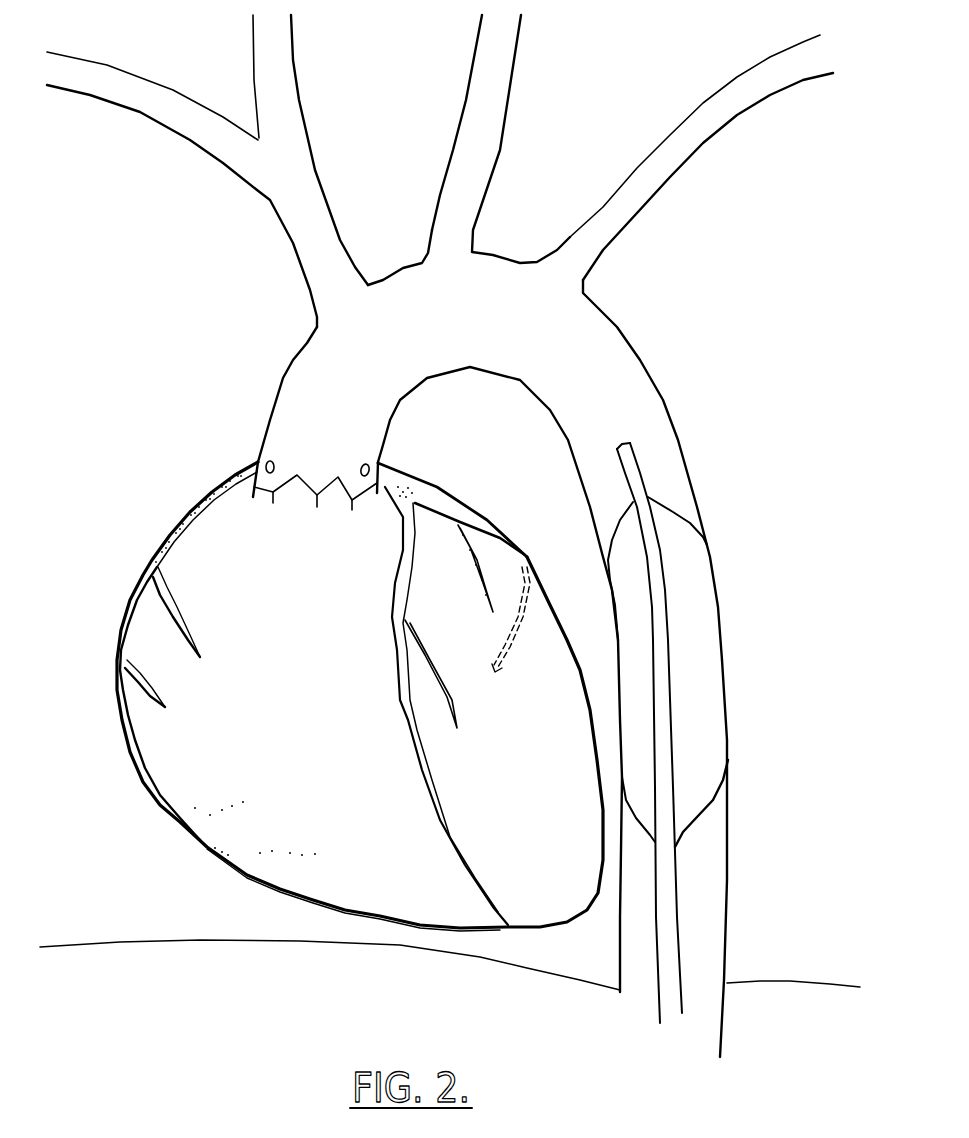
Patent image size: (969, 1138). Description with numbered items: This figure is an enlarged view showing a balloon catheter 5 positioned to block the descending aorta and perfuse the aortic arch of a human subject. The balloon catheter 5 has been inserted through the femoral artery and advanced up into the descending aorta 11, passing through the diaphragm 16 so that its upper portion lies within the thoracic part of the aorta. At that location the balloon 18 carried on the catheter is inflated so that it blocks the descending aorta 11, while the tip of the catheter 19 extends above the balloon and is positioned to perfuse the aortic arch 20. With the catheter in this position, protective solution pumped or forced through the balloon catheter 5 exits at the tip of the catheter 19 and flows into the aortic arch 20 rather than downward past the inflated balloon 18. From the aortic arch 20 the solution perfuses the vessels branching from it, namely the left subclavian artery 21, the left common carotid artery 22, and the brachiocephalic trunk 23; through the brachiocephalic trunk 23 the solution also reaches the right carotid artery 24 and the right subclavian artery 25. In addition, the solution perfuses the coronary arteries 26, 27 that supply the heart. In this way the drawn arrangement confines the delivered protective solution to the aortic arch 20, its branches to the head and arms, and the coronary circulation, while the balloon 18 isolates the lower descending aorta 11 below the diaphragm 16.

The balloon catheter 5 is at (675, 893).
The descending aorta 11 is at (728, 940).
The diaphragm 16 is at (773, 983).
The balloon 18 is at (708, 672).
The tip of the catheter 19 is at (620, 445).
The aortic arch 20 is at (622, 333).
The left subclavian artery 21 is at (627, 228).
The left common carotid artery 22 is at (490, 178).
The brachiocephalic trunk 23 is at (343, 233).
The right carotid artery 24 is at (298, 97).
The right subclavian artery 25 is at (190, 143).
The coronary artery 26 is at (232, 490).
The coronary artery 27 is at (418, 500).